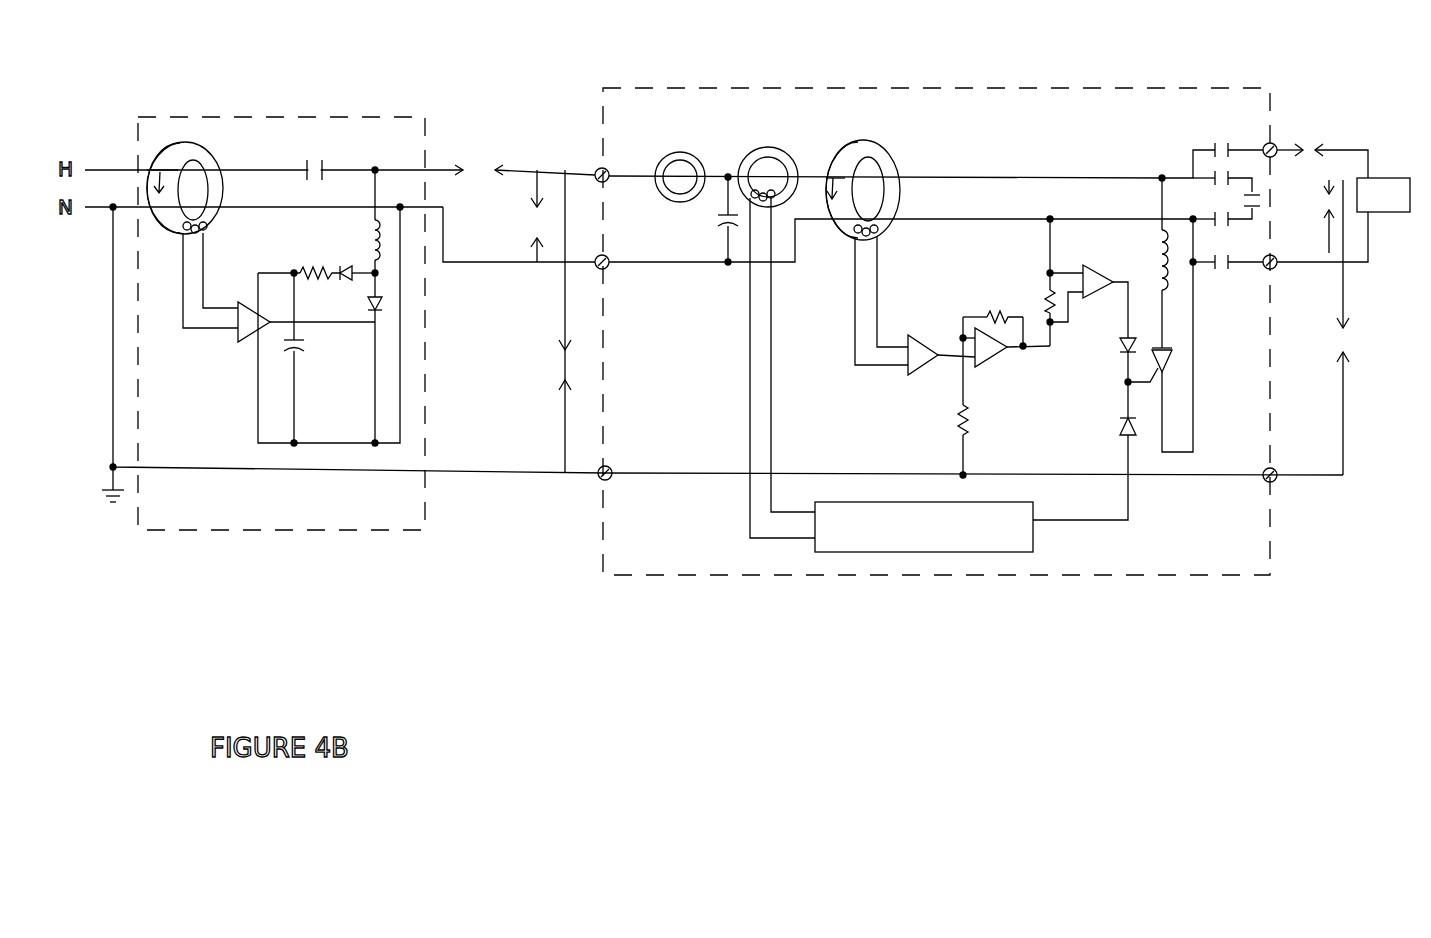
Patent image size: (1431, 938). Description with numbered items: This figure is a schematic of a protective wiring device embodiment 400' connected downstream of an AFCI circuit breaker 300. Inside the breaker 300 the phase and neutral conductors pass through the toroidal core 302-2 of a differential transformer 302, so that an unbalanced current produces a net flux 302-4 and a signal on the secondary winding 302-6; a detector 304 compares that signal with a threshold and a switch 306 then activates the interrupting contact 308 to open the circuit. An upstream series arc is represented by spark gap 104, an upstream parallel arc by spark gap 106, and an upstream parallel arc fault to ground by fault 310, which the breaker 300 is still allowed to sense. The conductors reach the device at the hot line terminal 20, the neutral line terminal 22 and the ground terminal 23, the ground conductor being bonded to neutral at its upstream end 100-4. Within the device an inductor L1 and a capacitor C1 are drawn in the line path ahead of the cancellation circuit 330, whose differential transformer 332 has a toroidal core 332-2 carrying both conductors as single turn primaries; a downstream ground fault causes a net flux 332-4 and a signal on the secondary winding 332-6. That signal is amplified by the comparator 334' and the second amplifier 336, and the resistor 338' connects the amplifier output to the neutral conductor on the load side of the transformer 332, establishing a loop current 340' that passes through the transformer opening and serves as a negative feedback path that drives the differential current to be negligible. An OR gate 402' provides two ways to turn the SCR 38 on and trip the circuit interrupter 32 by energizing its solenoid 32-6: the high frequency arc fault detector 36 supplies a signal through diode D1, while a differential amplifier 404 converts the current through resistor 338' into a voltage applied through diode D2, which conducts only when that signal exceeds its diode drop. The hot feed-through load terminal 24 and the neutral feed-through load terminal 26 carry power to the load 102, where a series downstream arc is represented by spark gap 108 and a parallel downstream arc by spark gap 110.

The AFCI circuit breaker 300 is at (287, 108).
The differential transformer 302 is at (178, 138).
The toroidal core 302-2 is at (200, 156).
The net flux 302-4 is at (138, 178).
The secondary winding 302-6 is at (206, 224).
The interrupting contact 308 is at (330, 162).
The detector 304 is at (250, 340).
The switch 306 is at (355, 340).
The upstream end 100-4 is at (108, 462).
The loop current 340' is at (543, 348).
The spark gap 104 is at (487, 158).
The spark gap 106 is at (530, 205).
The upstream parallel arc fault 310 is at (545, 360).
The hot line terminal 20 is at (595, 165).
The neutral line terminal 22 is at (598, 275).
The ground terminal 23 is at (592, 488).
The embodiment 400' is at (936, 304).
The inductor L1 is at (673, 185).
The capacitor C1 is at (713, 219).
The differential transformer 332 is at (838, 126).
The toroidal core 332-2 is at (882, 152).
The net flux 332-4 is at (818, 247).
The secondary winding 332-6 is at (878, 238).
The arc fault detector 36 is at (827, 493).
The cancellation circuit 330 is at (848, 370).
The comparator 334' is at (935, 335).
The second amplifier 336 is at (995, 367).
The resistor 338' is at (1089, 318).
The OR gate 402' is at (1010, 397).
The differential amplifier 404 is at (1074, 248).
The diode D2 is at (1114, 365).
The diode D1 is at (1084, 467).
The circuit interrupter 32 is at (1162, 150).
The solenoid 32-6 is at (1152, 248).
The SCR 38 is at (1178, 356).
The hot feed-through load terminal 24 is at (1266, 145).
The neutral feed-through load terminal 26 is at (1276, 268).
The spark gap 108 is at (1315, 133).
The load 102 is at (1400, 167).
The spark gap 110 is at (1320, 204).